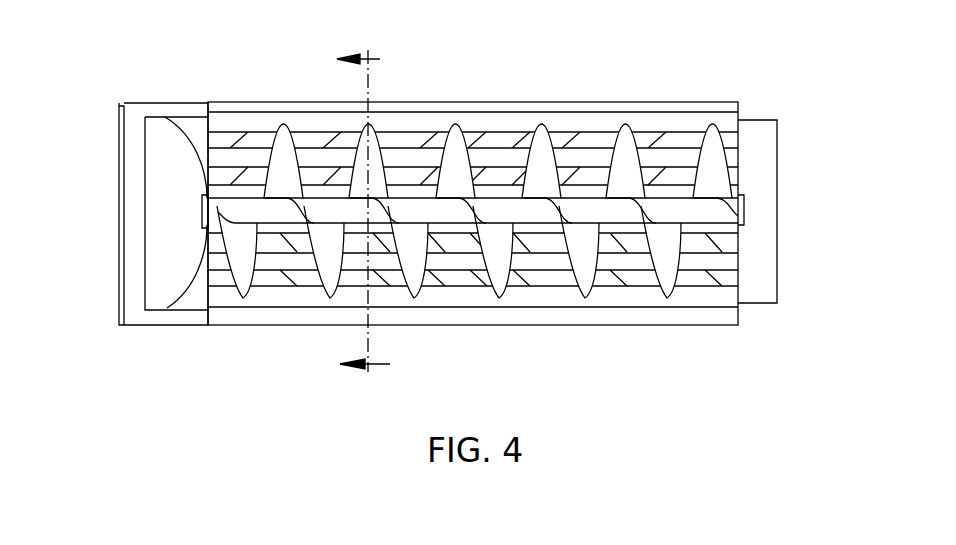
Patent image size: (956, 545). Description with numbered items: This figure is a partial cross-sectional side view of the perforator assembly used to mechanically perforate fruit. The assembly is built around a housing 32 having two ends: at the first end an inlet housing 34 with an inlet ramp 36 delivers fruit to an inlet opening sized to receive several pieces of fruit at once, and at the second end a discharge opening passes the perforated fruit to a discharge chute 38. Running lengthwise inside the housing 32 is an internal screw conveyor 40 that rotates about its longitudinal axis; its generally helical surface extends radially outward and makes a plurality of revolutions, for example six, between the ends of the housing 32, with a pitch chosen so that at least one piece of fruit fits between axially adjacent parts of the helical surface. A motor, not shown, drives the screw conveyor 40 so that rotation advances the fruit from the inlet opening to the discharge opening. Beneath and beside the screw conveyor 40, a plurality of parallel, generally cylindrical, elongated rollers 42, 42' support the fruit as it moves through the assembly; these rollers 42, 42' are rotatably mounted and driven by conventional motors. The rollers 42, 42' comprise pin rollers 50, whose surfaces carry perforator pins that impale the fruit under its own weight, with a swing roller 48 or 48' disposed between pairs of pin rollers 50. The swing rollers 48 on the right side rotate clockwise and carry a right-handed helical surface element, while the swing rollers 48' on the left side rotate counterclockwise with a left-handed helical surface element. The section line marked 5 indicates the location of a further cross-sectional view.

The section line 5- 5 is at (377, 212).
The housing 32 is at (410, 97).
The inlet housing 34 is at (133, 183).
The inlet ramp 36 is at (168, 150).
The discharge chute 38 is at (758, 153).
The screw conveyor 40 is at (282, 157).
The rollers 42 is at (473, 305).
The rollers 42' is at (473, 111).
The swing roller 48 is at (501, 307).
The swing roller 48' is at (448, 108).
The pin rollers 50 is at (653, 155).